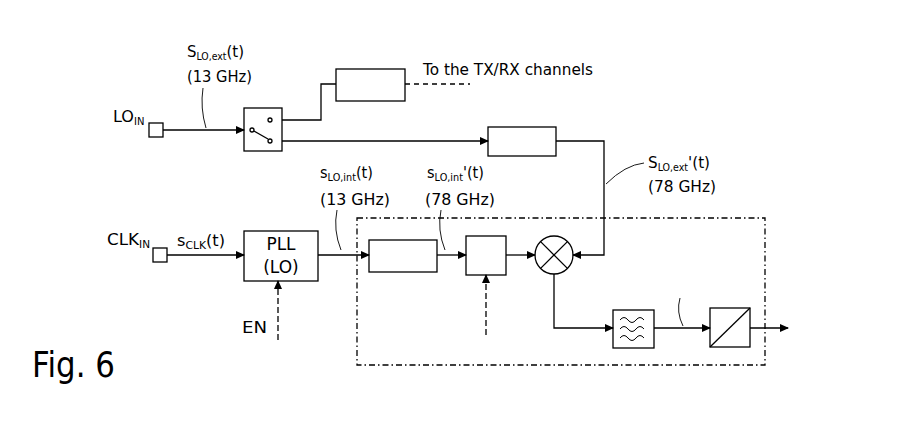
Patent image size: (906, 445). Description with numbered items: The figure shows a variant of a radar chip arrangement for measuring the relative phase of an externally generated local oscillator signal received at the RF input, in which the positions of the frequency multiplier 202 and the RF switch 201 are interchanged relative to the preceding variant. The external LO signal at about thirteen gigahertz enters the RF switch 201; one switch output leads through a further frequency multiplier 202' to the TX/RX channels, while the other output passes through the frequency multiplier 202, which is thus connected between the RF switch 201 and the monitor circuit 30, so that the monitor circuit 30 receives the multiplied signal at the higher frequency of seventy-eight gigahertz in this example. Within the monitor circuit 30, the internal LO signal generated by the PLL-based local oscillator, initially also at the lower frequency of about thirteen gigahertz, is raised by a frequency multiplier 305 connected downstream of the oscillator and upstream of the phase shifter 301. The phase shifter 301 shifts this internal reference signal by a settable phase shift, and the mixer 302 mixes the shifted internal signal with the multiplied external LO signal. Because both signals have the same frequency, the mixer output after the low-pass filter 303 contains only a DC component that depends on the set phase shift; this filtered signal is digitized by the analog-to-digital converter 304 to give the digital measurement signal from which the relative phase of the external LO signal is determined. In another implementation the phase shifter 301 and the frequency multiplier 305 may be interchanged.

The RF switch 201 is at (261, 108).
The further frequency multiplier 202' is at (372, 70).
The frequency multiplier 202 is at (538, 123).
The monitor circuit 30 is at (572, 303).
The phase shifter 301 is at (500, 277).
The mixer 302 is at (569, 268).
The low-pass filter 303 is at (613, 343).
The analog-to-digital converter 304 is at (735, 308).
The frequency multiplier 305 is at (402, 273).